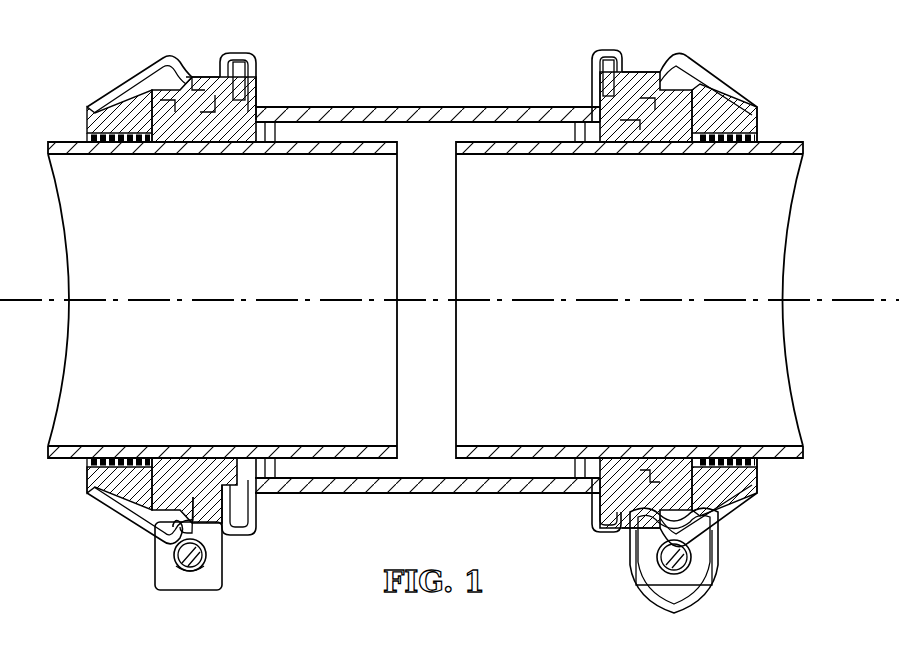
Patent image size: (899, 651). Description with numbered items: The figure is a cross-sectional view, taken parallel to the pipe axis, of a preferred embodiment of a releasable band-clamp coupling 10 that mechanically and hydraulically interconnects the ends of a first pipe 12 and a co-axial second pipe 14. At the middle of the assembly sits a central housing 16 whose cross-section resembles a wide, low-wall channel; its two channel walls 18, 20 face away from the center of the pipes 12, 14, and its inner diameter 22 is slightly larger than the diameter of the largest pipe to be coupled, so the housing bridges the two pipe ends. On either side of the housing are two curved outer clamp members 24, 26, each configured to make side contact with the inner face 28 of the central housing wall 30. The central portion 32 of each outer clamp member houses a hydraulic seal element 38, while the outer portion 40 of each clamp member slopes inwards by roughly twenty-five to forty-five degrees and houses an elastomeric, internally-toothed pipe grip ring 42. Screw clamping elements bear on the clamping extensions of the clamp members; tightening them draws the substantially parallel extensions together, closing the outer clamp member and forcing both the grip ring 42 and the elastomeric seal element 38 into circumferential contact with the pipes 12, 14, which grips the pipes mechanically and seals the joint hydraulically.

The releasable band-clamp coupling 10 is at (767, 548).
The first pipe 12 is at (55, 147).
The second pipe 14 is at (793, 138).
The central housing 16 is at (470, 113).
The channel wall 18 is at (252, 108).
The channel wall 20 is at (600, 98).
The inner diameter 22 is at (445, 123).
The outer clamp member 24 is at (700, 59).
The outer clamp member 26 is at (104, 69).
The inner face 28 is at (250, 110).
The central housing wall 30 is at (598, 92).
The central portion 32 is at (200, 80).
The hydraulic seal element 38 is at (655, 482).
The outer portion 40 is at (118, 503).
The pipe grip ring 42 is at (118, 122).